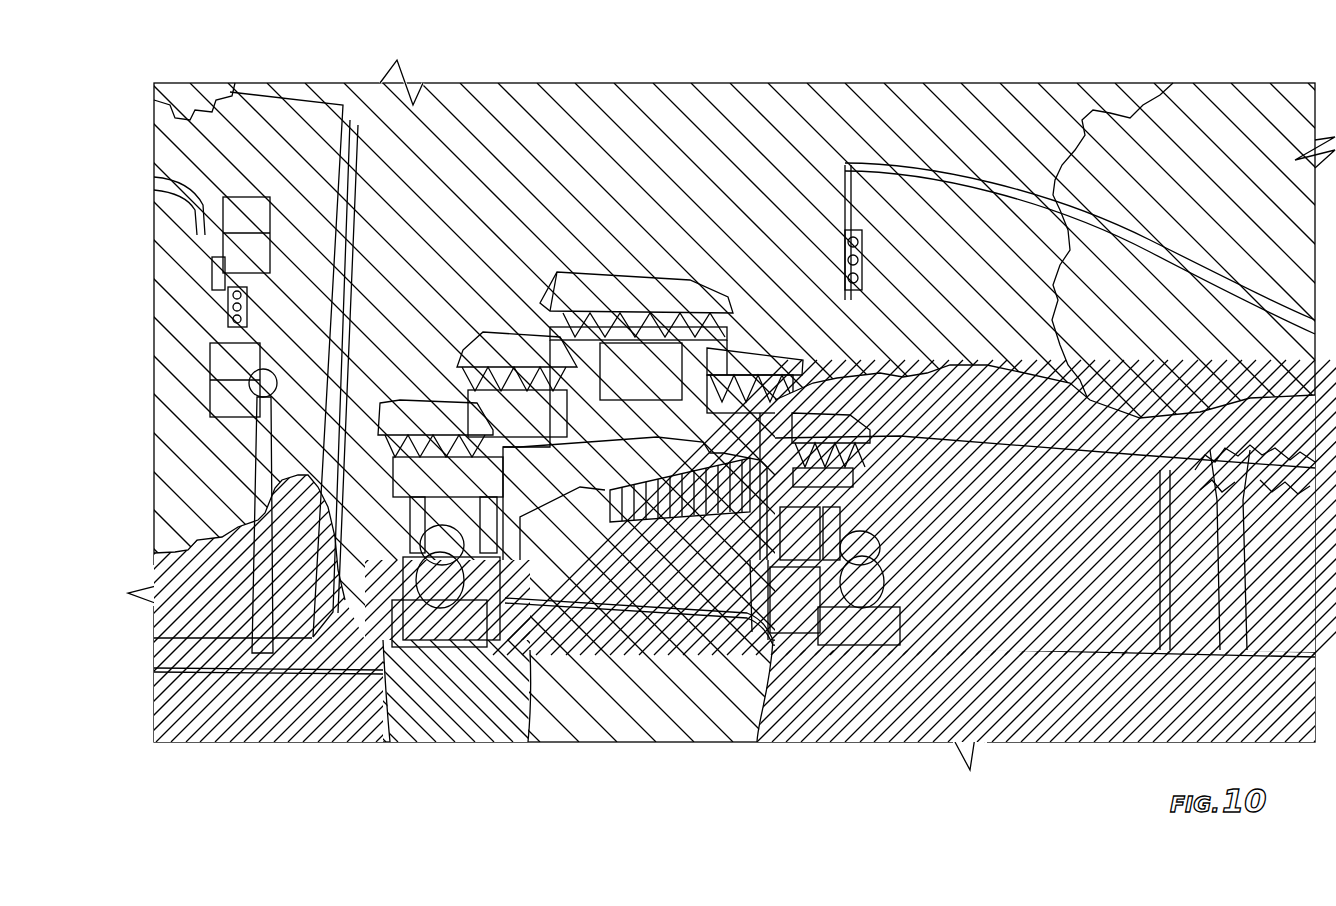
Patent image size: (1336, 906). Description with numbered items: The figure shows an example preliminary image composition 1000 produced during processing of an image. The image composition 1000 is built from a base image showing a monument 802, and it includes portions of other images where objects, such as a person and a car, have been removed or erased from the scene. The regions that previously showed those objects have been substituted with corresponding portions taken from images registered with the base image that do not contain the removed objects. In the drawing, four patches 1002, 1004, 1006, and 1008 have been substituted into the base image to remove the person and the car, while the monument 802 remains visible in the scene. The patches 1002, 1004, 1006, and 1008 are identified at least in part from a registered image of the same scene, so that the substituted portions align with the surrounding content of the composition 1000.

The preliminary image composition 1000 is at (785, 787).
The patch 1002 is at (235, 718).
The patch 1004 is at (457, 718).
The patch 1006 is at (705, 715).
The patch 1008 is at (928, 713).
The monument 802 is at (620, 360).